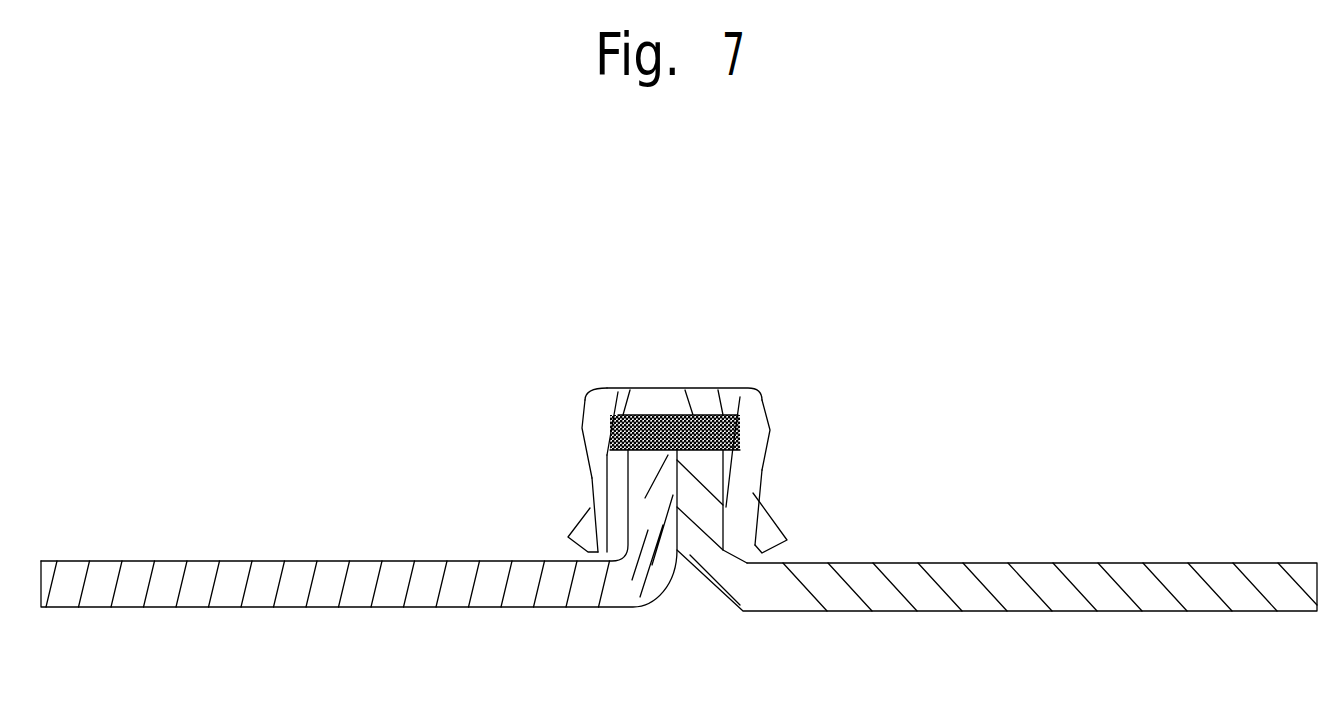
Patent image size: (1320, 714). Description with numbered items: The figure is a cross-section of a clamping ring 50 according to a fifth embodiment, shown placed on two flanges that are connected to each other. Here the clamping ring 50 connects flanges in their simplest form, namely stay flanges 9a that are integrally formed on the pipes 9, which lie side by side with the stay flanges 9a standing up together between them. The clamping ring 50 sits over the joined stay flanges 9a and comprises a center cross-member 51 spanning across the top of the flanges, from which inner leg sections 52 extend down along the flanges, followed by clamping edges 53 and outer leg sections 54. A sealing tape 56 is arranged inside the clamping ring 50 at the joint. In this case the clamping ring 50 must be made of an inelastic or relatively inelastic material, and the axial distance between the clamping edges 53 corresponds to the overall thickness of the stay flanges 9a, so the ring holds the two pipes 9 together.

The pipe 9 is at (679, 549).
The stay flange 9a is at (598, 478).
The clamping ring 50 is at (666, 402).
The center cross-member 51 is at (708, 393).
The inner leg section 52 is at (605, 445).
The clamping edge 53 is at (605, 498).
The outer leg section 54 is at (583, 535).
The sealing tape 56 is at (663, 425).